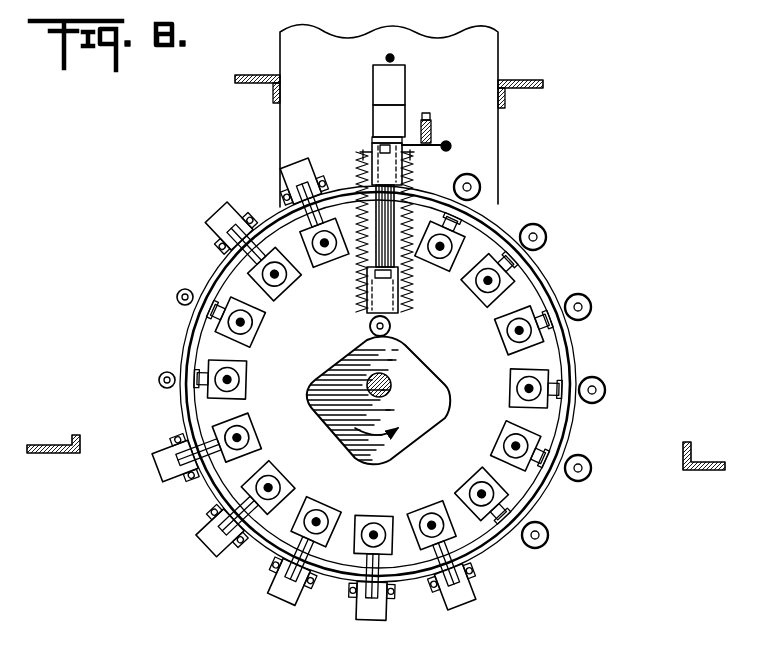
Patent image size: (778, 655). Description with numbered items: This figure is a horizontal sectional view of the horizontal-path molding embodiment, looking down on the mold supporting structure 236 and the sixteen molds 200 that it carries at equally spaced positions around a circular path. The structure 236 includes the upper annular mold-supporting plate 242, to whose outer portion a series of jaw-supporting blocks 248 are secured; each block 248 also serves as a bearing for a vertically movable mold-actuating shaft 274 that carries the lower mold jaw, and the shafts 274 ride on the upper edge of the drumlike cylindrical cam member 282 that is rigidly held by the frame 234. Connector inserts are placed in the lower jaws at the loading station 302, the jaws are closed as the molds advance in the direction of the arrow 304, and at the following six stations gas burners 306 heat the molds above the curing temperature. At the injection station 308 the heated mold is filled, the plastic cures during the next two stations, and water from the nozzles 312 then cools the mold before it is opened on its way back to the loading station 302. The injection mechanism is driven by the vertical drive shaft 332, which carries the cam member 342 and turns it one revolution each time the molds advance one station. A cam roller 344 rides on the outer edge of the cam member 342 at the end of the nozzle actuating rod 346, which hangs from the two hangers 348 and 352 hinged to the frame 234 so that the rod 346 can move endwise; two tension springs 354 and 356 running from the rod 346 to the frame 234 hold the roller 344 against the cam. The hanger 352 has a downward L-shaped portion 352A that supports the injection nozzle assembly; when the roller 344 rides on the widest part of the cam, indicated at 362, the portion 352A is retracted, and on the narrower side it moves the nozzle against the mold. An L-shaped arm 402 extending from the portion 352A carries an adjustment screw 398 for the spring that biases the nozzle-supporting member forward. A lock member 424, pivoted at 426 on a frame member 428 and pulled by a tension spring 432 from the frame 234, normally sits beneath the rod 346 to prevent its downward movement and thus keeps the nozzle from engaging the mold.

The molds 200 is at (283, 172).
The frame 234 is at (498, 52).
The mold supporting structure 236 is at (522, 292).
The upper annular mold-supporting plate 242 is at (280, 310).
The jaw-supporting blocks 248 is at (248, 395).
The mold-actuating shaft 274 is at (252, 439).
The cylindrical cam member 282 is at (215, 412).
The loading station 302 is at (280, 605).
The arrow 304 is at (470, 633).
The gas burners 306 is at (481, 190).
The injection station 308 is at (386, 186).
The nozzles 312 is at (183, 305).
The vertical drive shaft 332 is at (389, 392).
The cam member 342 is at (325, 393).
The cam roller 344 is at (392, 326).
The nozzle actuating rod 346 is at (408, 194).
The hanger 348 is at (372, 300).
The hanger 352 is at (375, 145).
The L-shaped portion 352A is at (380, 118).
The tension spring 354 is at (413, 284).
The tension spring 356 is at (358, 266).
The widest part of the cam member 362 is at (375, 457).
The adjustment screw 398 is at (388, 56).
The L-shaped arm 402 is at (383, 77).
The lock member 424 is at (440, 145).
The pivot 426 is at (425, 118).
The frame member 428 is at (432, 133).
The tension spring 432 is at (450, 148).